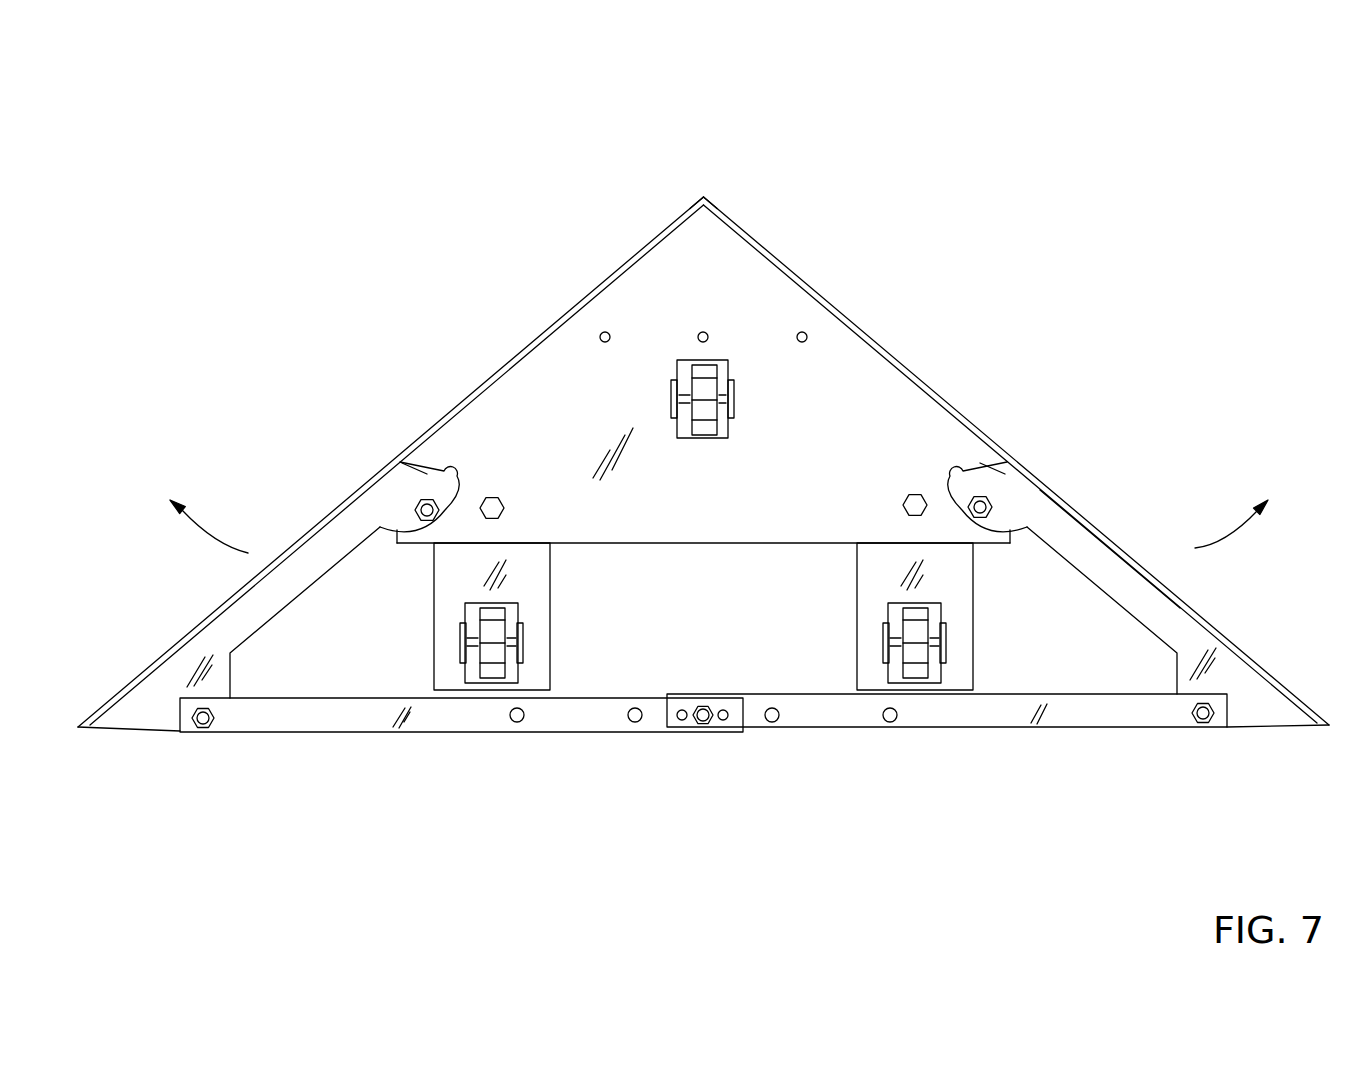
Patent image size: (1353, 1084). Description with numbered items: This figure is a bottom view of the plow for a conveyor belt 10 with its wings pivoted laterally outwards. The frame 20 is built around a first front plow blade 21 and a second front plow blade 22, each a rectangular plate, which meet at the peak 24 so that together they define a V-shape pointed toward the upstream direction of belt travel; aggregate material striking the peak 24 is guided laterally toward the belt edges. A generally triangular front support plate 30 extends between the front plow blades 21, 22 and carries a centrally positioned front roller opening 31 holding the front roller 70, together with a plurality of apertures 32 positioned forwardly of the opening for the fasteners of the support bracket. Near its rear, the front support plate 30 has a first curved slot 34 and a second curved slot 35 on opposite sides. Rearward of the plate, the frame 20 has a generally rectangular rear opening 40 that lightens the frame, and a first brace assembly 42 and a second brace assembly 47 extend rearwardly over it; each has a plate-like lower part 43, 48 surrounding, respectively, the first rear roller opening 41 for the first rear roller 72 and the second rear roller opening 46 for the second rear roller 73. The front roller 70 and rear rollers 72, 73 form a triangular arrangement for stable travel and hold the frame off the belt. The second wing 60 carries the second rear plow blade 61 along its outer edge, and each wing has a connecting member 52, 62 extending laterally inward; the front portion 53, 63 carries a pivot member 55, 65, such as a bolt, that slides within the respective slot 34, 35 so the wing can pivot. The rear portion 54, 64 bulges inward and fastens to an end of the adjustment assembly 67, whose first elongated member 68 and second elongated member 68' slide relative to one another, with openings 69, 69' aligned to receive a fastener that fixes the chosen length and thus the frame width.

The plow for a conveyor belt 10 is at (205, 155).
The frame 20 is at (935, 238).
The first front plow blade 21 is at (620, 263).
The second front plow blade 22 is at (840, 310).
The peak 24 is at (704, 197).
The front support plate 30 is at (550, 368).
The front roller opening 31 is at (677, 368).
The apertures 32 is at (797, 337).
The first curved slot 34 is at (443, 468).
The second curved slot 35 is at (970, 463).
The rear opening 40 is at (790, 679).
The first rear roller opening 41 is at (520, 667).
The first brace assembly 42 is at (569, 558).
The lower part 43 is at (533, 583).
The second rear roller opening 46 is at (945, 668).
The second brace assembly 47 is at (841, 552).
The lower part 48 is at (860, 570).
The connecting member 52 is at (260, 605).
The front portion 53 is at (400, 463).
The rear portion 54 is at (122, 733).
The pivot member 55 is at (418, 508).
The second wing 60 is at (1235, 615).
The second rear plow blade 61 is at (1113, 543).
The connecting member 62 is at (1163, 605).
The front portion 63 is at (980, 467).
The rear portion 64 is at (1280, 725).
The pivot member 65 is at (990, 505).
The adjustment assembly 67 is at (630, 775).
The first elongated member 68 is at (467, 798).
The second elongated member 68' is at (947, 786).
The openings 69 is at (691, 767).
The openings 69' is at (968, 793).
The front roller 70 is at (733, 367).
The first rear roller 72 is at (503, 615).
The second rear roller 73 is at (943, 607).